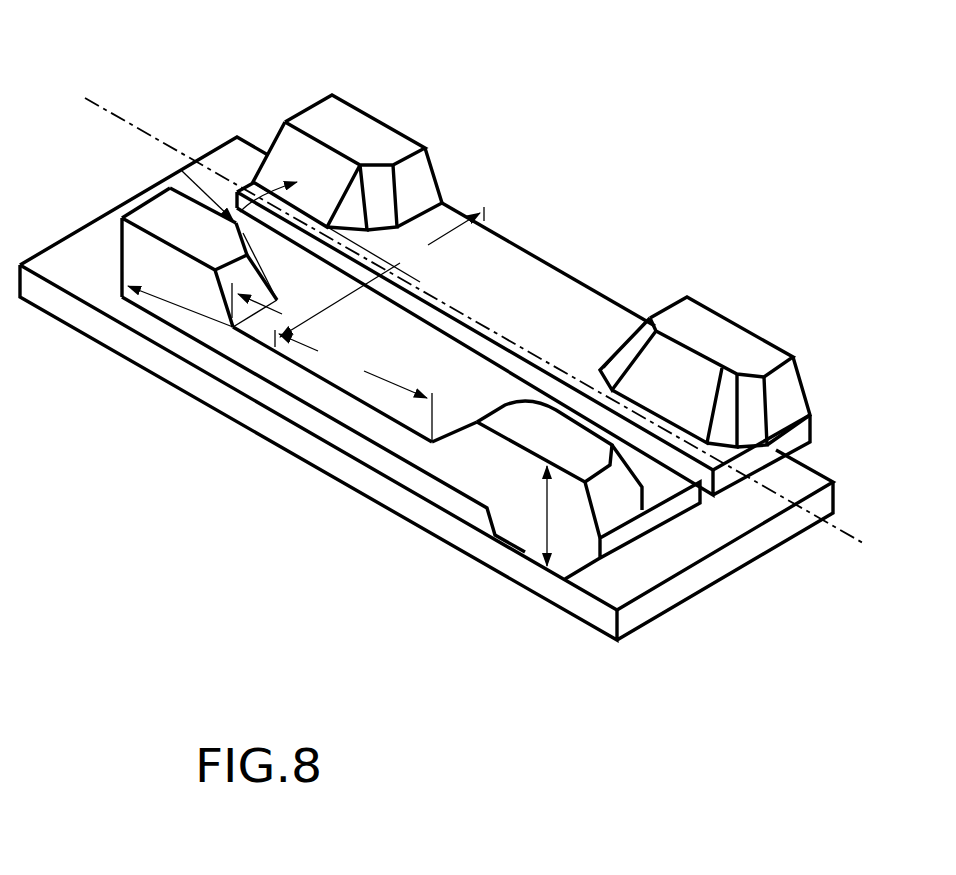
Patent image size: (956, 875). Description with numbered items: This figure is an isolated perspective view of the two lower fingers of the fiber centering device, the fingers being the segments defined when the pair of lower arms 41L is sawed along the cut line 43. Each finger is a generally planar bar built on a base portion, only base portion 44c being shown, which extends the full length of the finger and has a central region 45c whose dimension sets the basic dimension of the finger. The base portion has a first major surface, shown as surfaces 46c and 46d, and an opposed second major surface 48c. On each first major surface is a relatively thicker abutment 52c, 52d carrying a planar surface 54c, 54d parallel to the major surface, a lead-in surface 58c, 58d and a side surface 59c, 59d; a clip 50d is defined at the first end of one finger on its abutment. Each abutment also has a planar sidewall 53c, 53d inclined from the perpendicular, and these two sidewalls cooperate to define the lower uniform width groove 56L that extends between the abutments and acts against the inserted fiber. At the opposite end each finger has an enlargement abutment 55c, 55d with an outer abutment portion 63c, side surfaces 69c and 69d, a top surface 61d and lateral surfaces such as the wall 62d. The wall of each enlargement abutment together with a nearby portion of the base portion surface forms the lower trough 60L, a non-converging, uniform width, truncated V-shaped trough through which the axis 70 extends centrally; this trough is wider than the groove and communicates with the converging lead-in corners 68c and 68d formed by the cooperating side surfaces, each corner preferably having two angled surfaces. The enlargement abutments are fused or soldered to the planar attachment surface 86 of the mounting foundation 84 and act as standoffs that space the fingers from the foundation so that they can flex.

The axis 70 is at (113, 112).
The mounting foundation 84 is at (756, 561).
The planar attachment surface 86 is at (685, 555).
The abutment 52c is at (123, 262).
The planar sidewall 53c is at (187, 197).
The planar surface 54c is at (155, 212).
The lead-in surface 58c is at (262, 245).
The side surface 59c is at (268, 282).
The second major surface 48c is at (318, 420).
The base portion 44c is at (596, 551).
The first major surface 46c is at (458, 401).
The central region 45c is at (353, 385).
The lower arms 41L is at (382, 272).
The enlargement abutment 55c is at (523, 535).
The side surface 69c is at (641, 489).
The outer abutment portion 63c is at (552, 516).
The cut line 43 is at (466, 340).
The first major surface 46d is at (548, 264).
The converging lead-in corner 68c is at (711, 497).
The lower trough 60L is at (581, 422).
The lower uniform width groove 56L is at (258, 186).
The clip 50d is at (349, 120).
The abutment 52d is at (430, 165).
The planar sidewall 53d is at (288, 137).
The planar surface 54d is at (313, 112).
The lead-in surface 58d is at (363, 185).
The side surface 59d is at (384, 188).
The enlargement abutment 55d is at (702, 302).
The top surface 61d is at (718, 333).
The wall 62d is at (668, 364).
The converging lead-in corner 68d is at (728, 393).
The side surface 69d is at (748, 397).